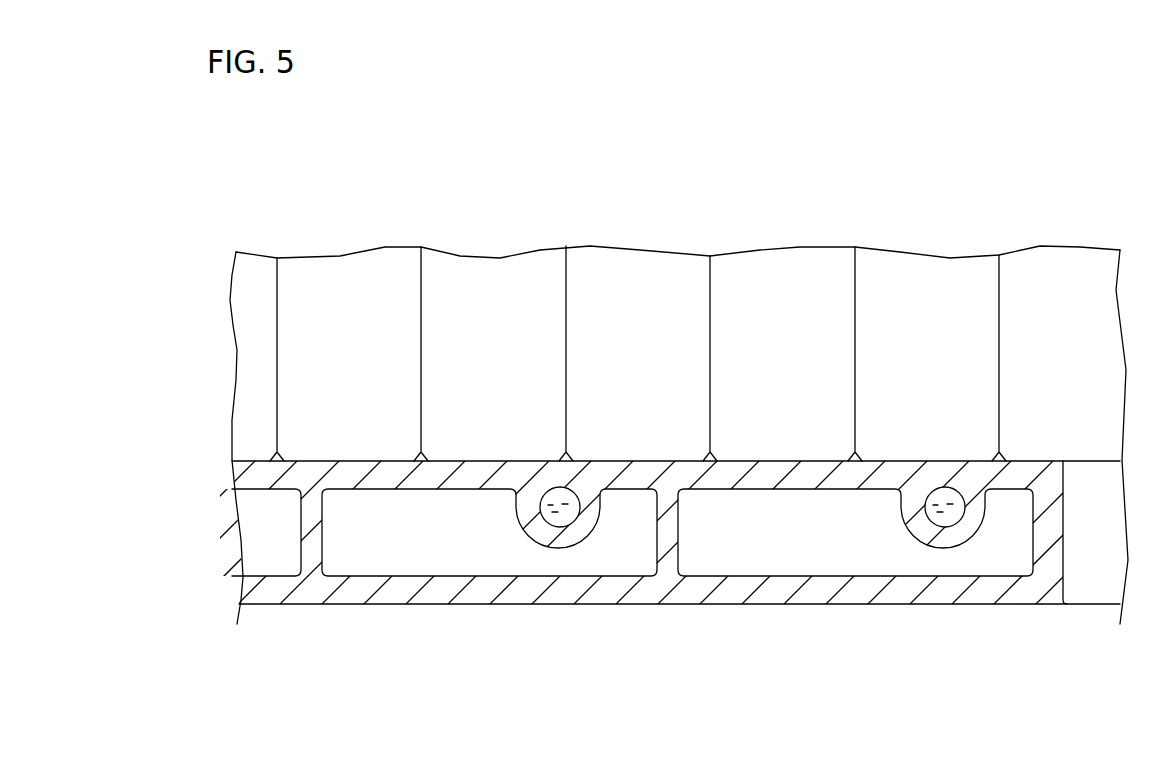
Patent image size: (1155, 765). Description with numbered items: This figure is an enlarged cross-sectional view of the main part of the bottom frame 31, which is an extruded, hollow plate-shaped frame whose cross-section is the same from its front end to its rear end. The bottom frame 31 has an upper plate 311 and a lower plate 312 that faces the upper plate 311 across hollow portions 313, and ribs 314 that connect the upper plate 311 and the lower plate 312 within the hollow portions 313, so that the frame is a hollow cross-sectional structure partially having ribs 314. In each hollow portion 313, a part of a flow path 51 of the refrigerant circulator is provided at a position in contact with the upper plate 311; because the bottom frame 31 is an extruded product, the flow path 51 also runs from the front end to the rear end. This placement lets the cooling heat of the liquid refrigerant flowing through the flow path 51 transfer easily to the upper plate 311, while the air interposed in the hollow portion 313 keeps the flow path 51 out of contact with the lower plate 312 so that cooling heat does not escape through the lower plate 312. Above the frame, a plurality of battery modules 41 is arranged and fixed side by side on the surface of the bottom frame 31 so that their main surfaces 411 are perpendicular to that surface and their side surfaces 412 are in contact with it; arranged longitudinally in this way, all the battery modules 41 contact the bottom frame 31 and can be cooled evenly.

The bottom frame 31 is at (1052, 613).
The upper plate 311 is at (803, 474).
The lower plate 312 is at (800, 607).
The hollow portion 313 is at (632, 532).
The rib 314 is at (314, 550).
The battery module 41 is at (614, 275).
The main surface 411 is at (714, 296).
The side surface 412 is at (764, 469).
The flow path 51 is at (560, 518).